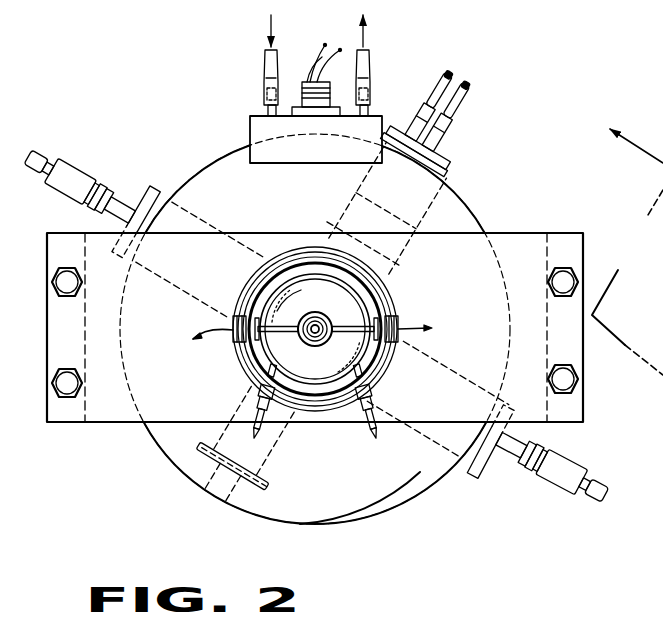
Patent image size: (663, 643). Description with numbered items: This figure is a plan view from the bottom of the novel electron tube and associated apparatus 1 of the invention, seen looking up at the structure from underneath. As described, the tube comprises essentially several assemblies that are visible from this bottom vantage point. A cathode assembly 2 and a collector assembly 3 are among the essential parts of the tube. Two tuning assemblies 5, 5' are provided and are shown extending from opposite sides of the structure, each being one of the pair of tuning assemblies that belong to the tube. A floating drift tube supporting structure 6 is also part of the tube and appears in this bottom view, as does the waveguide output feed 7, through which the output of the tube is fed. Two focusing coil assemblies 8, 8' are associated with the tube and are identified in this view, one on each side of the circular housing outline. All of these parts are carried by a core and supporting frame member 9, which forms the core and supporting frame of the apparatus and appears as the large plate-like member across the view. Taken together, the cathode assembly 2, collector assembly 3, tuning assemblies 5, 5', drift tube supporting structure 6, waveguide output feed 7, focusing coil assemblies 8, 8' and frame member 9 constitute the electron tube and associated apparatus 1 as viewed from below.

The electron tube and associated apparatus 1 is at (497, 207).
The cathode assembly 2 is at (400, 296).
The collector assembly 3 is at (627, 239).
The tuning assembly 5 is at (135, 221).
The tuning assembly 5' is at (493, 438).
The floating drift tube supporting structure 6 is at (448, 154).
The waveguide output feed 7 is at (224, 498).
The focusing coil assembly 8 is at (315, 329).
The focusing coil assembly 8' is at (360, 514).
The core and supporting frame member 9 is at (100, 417).